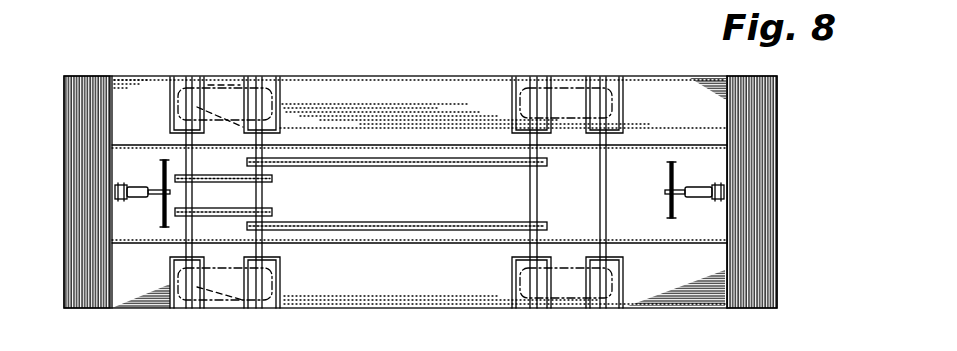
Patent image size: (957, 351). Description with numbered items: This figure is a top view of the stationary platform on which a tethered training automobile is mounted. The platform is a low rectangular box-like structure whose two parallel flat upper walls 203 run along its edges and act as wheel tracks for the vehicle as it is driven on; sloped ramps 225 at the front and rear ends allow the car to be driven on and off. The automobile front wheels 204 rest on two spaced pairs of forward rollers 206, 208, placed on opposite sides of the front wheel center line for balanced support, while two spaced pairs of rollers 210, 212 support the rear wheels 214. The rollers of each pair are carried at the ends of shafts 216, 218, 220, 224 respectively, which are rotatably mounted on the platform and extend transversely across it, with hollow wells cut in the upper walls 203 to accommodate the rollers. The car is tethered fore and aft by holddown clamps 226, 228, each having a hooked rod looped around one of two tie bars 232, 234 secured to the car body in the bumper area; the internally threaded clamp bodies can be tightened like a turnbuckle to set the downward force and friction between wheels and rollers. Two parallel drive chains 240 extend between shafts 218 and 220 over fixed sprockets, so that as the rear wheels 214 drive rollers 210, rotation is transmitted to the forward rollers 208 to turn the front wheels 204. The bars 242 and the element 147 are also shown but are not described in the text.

The frame 147 is at (723, 346).
The upper walls 203 is at (350, 290).
The front wheels 204 is at (212, 82).
The forward rollers 206 is at (205, 78).
The forward rollers 208 is at (282, 82).
The rollers 210 is at (545, 80).
The rollers 212 is at (622, 80).
The rear wheels 214 is at (572, 83).
The shaft 216 is at (194, 195).
The shaft 218 is at (264, 194).
The shaft 220 is at (530, 186).
The shaft 224 is at (607, 196).
The sloped ramps 225 is at (786, 78).
The holddown clamp 226 is at (140, 198).
The holddown clamp 228 is at (700, 198).
The tie bar 232 is at (162, 164).
The tie bar 234 is at (675, 172).
The drive chains 240 is at (337, 222).
The guide bar 242 is at (205, 160).